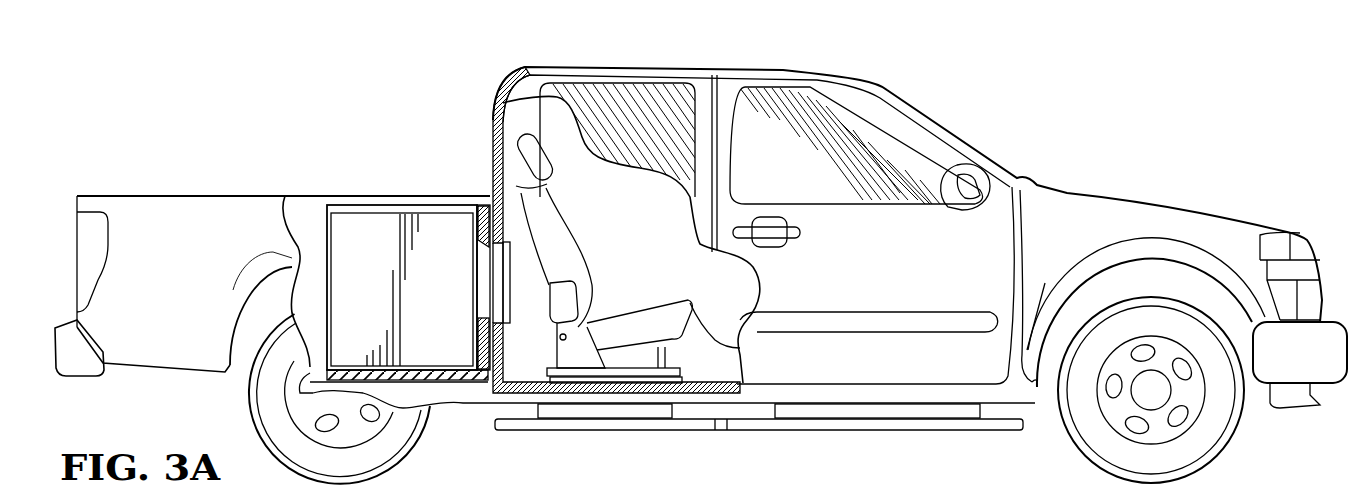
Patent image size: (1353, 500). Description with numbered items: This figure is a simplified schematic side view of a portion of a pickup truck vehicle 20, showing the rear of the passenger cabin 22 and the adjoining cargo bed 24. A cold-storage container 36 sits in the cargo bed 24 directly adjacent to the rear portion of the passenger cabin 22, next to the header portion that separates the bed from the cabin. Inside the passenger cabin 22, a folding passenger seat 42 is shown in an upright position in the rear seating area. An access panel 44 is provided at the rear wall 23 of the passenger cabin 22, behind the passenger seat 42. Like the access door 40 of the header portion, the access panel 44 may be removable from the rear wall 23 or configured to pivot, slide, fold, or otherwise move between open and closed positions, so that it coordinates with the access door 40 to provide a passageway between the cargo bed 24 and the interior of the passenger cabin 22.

The pickup truck vehicle 20 is at (1072, 114).
The passenger cabin 22 is at (683, 66).
The rear wall 23 is at (543, 187).
The cargo bed 24 is at (218, 219).
The cold-storage container 36 is at (327, 248).
The access door 40 is at (480, 248).
The folding passenger seat 42 is at (740, 348).
The access panel 44 is at (507, 285).